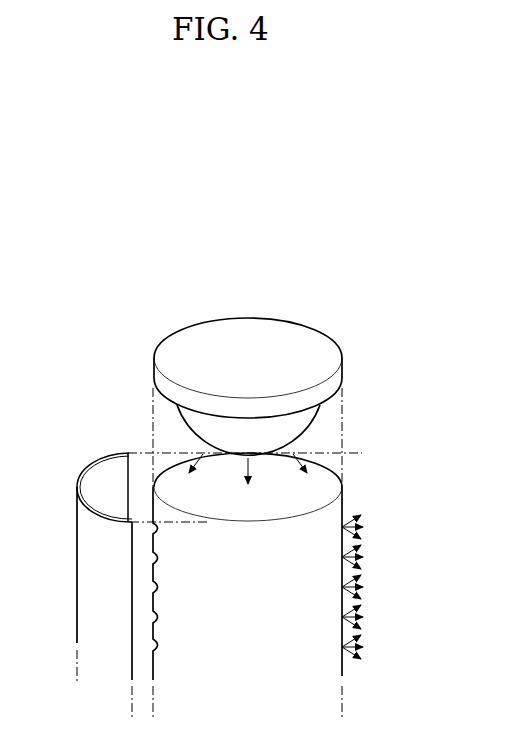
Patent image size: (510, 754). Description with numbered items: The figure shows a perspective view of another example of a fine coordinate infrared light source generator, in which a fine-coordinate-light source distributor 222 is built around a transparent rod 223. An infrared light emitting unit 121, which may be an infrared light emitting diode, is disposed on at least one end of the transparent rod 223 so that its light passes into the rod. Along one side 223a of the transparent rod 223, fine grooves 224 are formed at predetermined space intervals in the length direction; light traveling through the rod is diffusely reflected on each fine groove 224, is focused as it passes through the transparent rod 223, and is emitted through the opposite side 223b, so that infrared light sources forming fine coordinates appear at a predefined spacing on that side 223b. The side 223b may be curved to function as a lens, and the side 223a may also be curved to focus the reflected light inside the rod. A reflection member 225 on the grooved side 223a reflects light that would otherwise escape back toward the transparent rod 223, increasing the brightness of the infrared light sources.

The infrared light emitting unit 121 is at (307, 418).
The fine-coordinate-light source distributor 222 is at (365, 473).
The transparent rod 223 is at (335, 665).
The side having fine grooves 223a is at (156, 508).
The opposite side 223b is at (322, 512).
The fine grooves 224 is at (152, 583).
The reflection member 225 is at (85, 538).